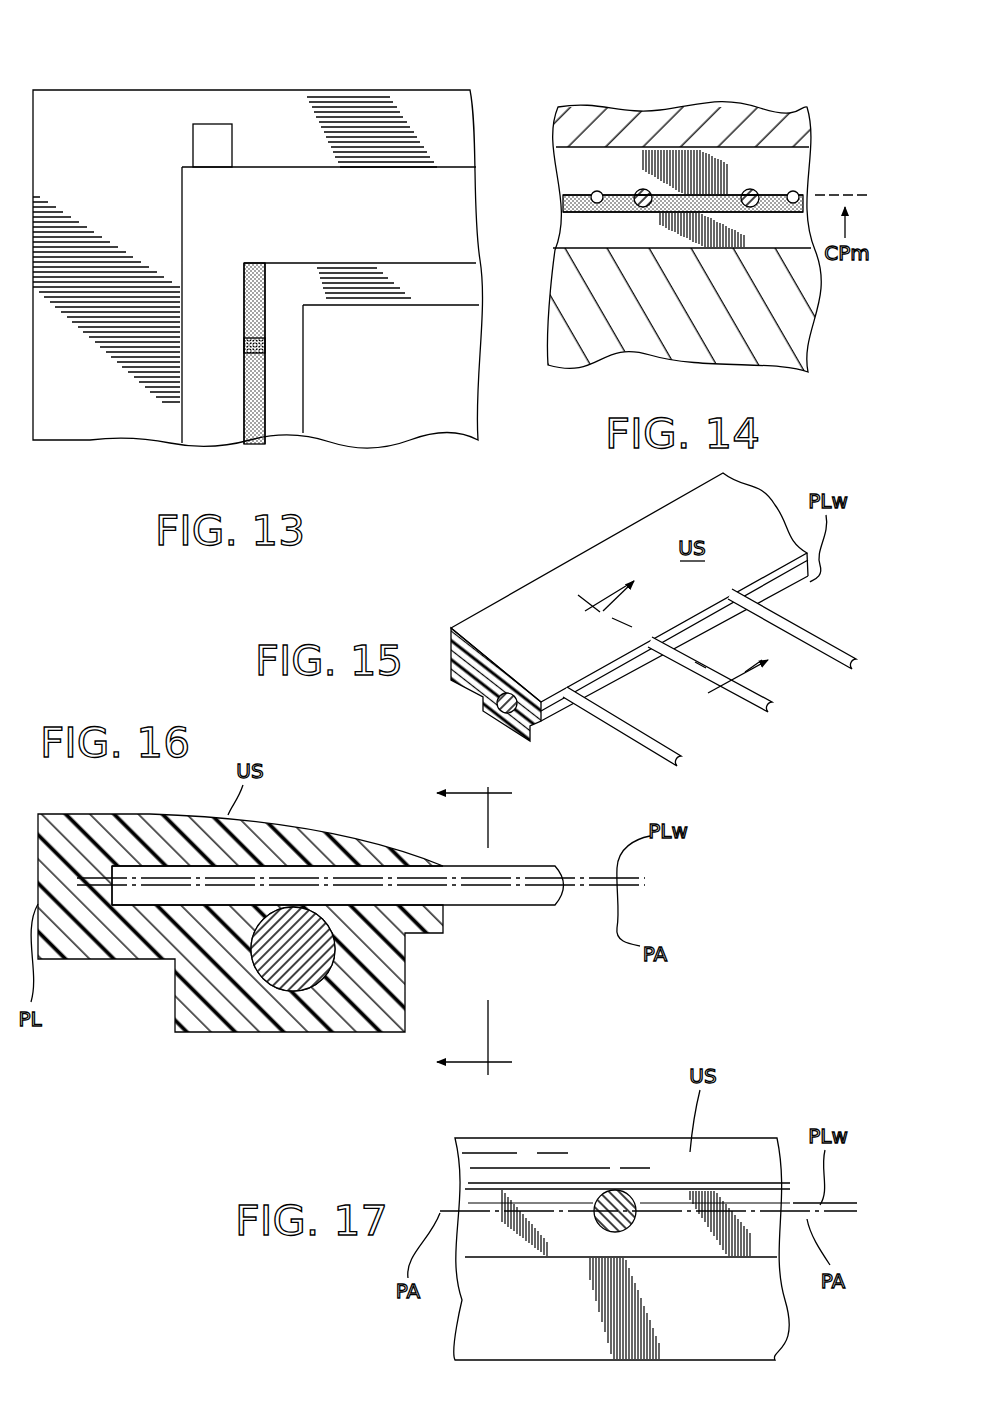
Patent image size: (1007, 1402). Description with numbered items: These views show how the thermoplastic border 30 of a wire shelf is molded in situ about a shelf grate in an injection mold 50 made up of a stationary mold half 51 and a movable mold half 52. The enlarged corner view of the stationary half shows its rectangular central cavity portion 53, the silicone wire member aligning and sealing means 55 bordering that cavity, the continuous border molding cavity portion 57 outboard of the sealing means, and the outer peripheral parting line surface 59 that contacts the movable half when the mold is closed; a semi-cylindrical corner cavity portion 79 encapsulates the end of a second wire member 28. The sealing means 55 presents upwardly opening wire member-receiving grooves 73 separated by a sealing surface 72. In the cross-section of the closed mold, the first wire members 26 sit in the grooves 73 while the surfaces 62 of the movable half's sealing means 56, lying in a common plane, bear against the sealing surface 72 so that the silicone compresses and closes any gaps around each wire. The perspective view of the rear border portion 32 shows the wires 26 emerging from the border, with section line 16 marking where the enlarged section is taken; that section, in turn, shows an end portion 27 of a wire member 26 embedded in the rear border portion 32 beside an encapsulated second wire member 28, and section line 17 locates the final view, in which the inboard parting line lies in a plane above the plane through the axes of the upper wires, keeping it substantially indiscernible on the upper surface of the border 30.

In FIG. 15, the section line 16- 16 is at (653, 656).
In FIG. 16, the section line 17- 17 is at (474, 932).
In FIG. 14, the first wire members 26 is at (600, 204).
In FIG. 15, the first wire members 26 is at (682, 740).
In FIG. 16, the first wire members 26 is at (505, 896).
In FIG. 17, the first wire members 26 is at (638, 1237).
In FIG. 16, the end portions of first wire members 27 is at (153, 887).
In FIG. 15, the second wire members 28 is at (497, 703).
In FIG. 16, the second wire members 28 is at (288, 969).
In FIG. 17, the peripheral border 30 is at (596, 1134).
In FIG. 15, the rear border portion 32 is at (548, 722).
In FIG. 16, the rear border portion 32 is at (202, 1014).
In FIG. 17, the rear border portion 32 is at (562, 1246).
In FIG. 14, the injection mold 50 is at (750, 76).
In FIG. 14, the stationary mold half 51 is at (801, 338).
In FIG. 14, the movable mold half 52 is at (773, 104).
In FIG. 13, the central cavity portion 53 is at (449, 383).
In FIG. 13, the wire member aligning and sealing means 55 is at (271, 427).
In FIG. 14, the wire member aligning and sealing means 55 is at (809, 214).
In FIG. 14, the wire member aligning and sealing means 56 is at (783, 169).
In FIG. 13, the border molding cavity portion 57 is at (474, 98).
In FIG. 13, the outer peripheral parting line surface 59 is at (458, 140).
In FIG. 14, the surface between sealing cavities 62 is at (637, 191).
In FIG. 13, the sealing surface 72 is at (243, 302).
In FIG. 14, the sealing surface 72 is at (732, 195).
In FIG. 13, the wire member-receiving grooves 73 is at (268, 346).
In FIG. 14, the wire member-receiving grooves 73 is at (646, 210).
In FIG. 13, the corner cavity portion 79 is at (210, 143).